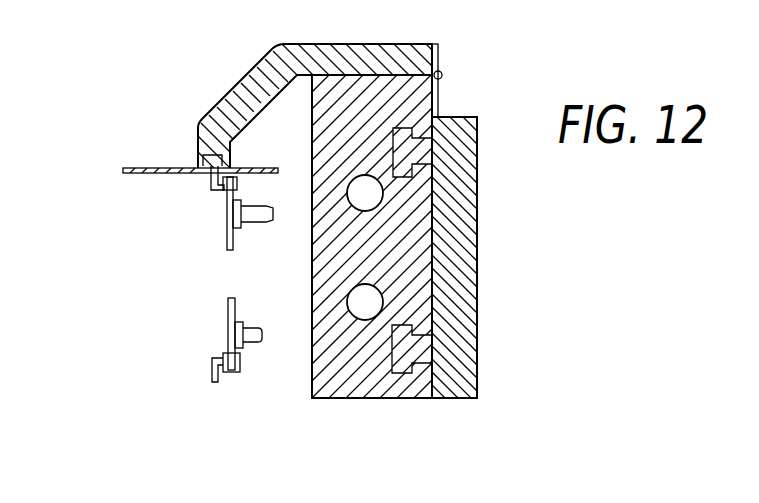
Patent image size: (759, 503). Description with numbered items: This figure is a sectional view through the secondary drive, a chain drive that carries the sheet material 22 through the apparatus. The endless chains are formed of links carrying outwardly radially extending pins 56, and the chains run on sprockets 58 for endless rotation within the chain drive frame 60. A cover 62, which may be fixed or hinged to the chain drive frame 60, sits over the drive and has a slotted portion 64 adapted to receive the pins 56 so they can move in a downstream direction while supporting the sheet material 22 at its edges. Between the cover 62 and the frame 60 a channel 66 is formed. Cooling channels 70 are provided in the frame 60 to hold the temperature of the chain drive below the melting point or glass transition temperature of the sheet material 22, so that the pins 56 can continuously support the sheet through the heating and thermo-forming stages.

The sheet material 22 is at (124, 169).
The pins 56 is at (197, 158).
The sprockets 58 is at (227, 214).
The chain drive frame 60 is at (325, 398).
The cover 62 is at (266, 57).
The slotted portion 64 is at (209, 115).
The channel 66 is at (288, 146).
The cooling channels 70 is at (370, 192).